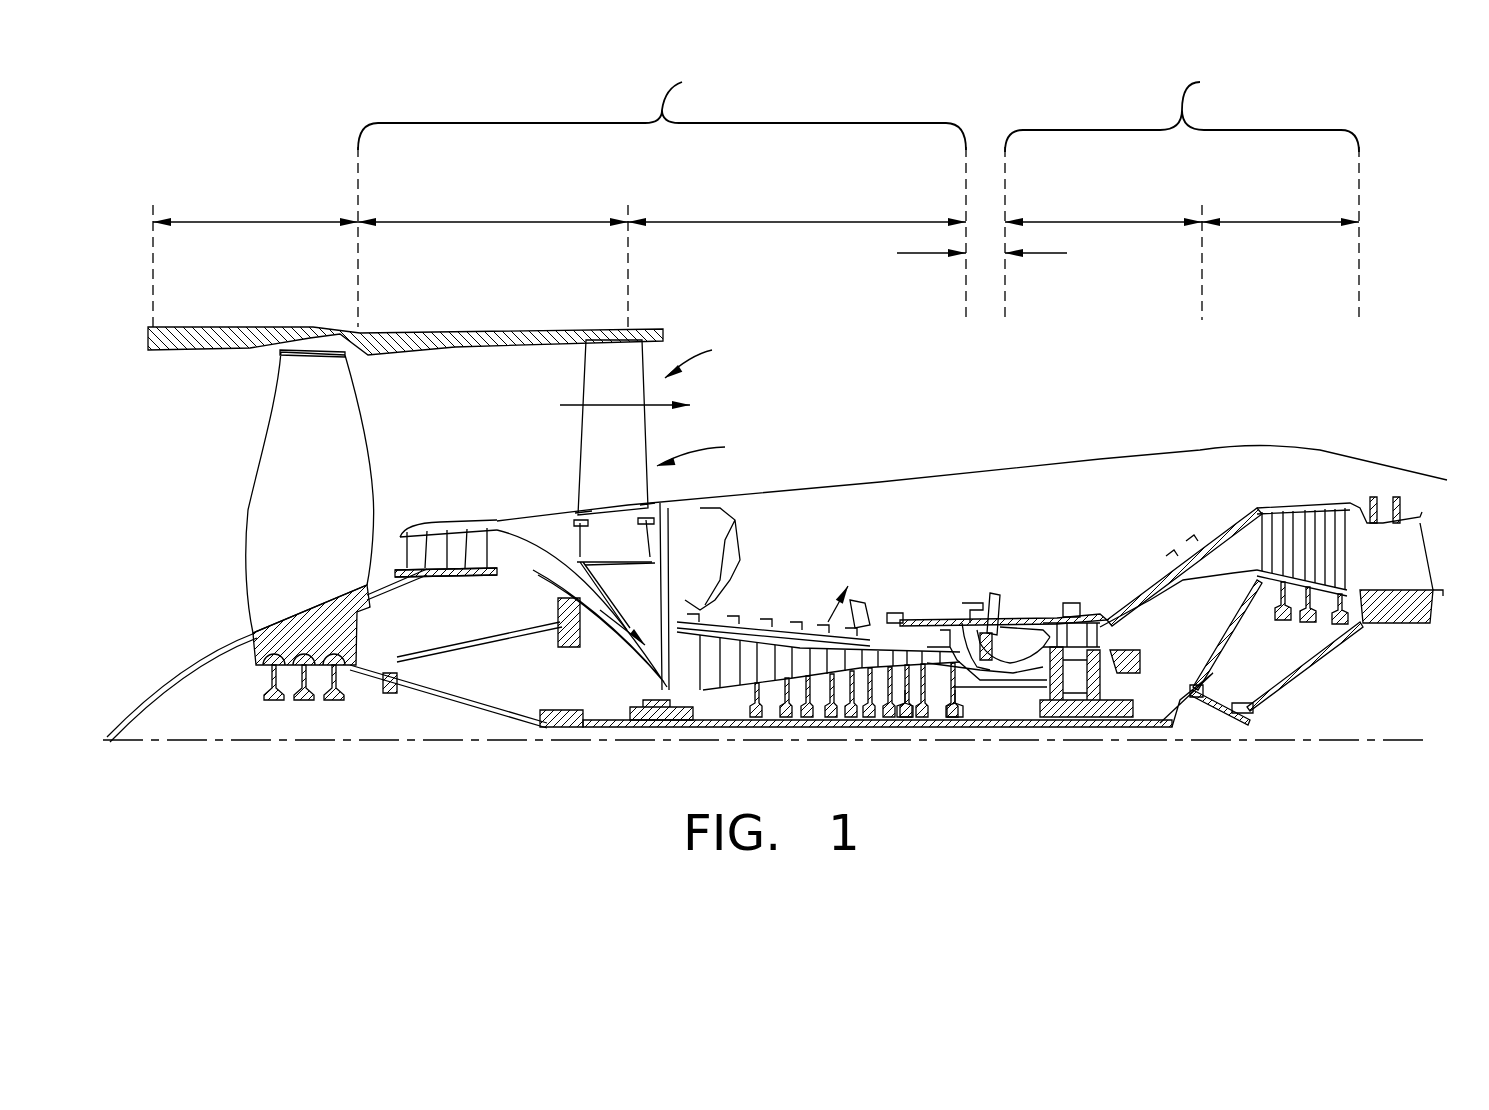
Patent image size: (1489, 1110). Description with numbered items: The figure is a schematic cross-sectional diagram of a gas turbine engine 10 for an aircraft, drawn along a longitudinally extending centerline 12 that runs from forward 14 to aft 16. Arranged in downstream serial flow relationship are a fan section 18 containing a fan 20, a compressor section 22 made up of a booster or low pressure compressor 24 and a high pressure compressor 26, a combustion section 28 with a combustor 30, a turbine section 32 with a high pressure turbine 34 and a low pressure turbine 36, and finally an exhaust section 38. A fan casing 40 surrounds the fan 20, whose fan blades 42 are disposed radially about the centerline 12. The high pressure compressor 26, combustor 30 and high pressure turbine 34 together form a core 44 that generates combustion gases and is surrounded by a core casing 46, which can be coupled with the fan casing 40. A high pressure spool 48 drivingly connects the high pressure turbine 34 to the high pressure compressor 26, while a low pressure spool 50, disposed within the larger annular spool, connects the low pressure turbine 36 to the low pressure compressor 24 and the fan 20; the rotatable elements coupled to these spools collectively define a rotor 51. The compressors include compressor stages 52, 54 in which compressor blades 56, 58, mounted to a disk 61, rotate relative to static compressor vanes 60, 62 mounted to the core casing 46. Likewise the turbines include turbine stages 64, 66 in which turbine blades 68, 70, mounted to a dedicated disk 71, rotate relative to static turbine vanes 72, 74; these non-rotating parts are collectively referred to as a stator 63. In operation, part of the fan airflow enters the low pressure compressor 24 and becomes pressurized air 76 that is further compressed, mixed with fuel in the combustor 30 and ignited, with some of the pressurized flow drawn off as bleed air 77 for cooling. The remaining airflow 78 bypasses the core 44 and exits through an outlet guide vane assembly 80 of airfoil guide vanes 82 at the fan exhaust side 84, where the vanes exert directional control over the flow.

The gas turbine engine 10 is at (1374, 253).
The centerline 12 is at (232, 745).
The forward 14 is at (188, 464).
The aft 16 is at (1462, 565).
The fan section 18 is at (255, 222).
The fan 20 is at (231, 587).
The compressor section 22 is at (662, 110).
The low pressure compressor 24 is at (495, 222).
The high pressure compressor 26 is at (797, 222).
The combustion section 28 is at (912, 253).
The combustor 30 is at (1007, 637).
The turbine section 32 is at (1182, 111).
The high pressure turbine 34 is at (1103, 222).
The low pressure turbine 36 is at (1278, 222).
The exhaust section 38 is at (1452, 490).
The fan casing 40 is at (392, 327).
The fan blades 42 is at (327, 398).
The core 44 is at (925, 505).
The core casing 46 is at (1190, 547).
The high pressure spool 48 is at (967, 693).
The low pressure spool 50 is at (560, 720).
The rotor 51 is at (823, 730).
The compressor stages 52 is at (410, 437).
The compressor stages 54 is at (794, 618).
The compressor blades 56 is at (435, 530).
The compressor blades 58 is at (713, 640).
The static compressor vanes 60 is at (417, 530).
The disk 61 is at (451, 572).
The static compressor vanes 62 is at (695, 640).
The stator 63 is at (1258, 500).
The turbine stages 64 is at (1007, 570).
The turbine stages 66 is at (1287, 440).
The turbine blades 68 is at (1062, 617).
The turbine blades 70 is at (1344, 513).
The disk 71 is at (1072, 680).
The static turbine vanes 72 is at (1043, 617).
The static turbine vanes 74 is at (1325, 520).
The pressurized air 76 is at (597, 645).
The bleed air 77 is at (828, 622).
The bypass airflow 78 is at (573, 405).
The outlet guide vane assembly 80 is at (708, 451).
The airfoil guide vanes 82 is at (592, 440).
The fan exhaust side 84 is at (705, 357).